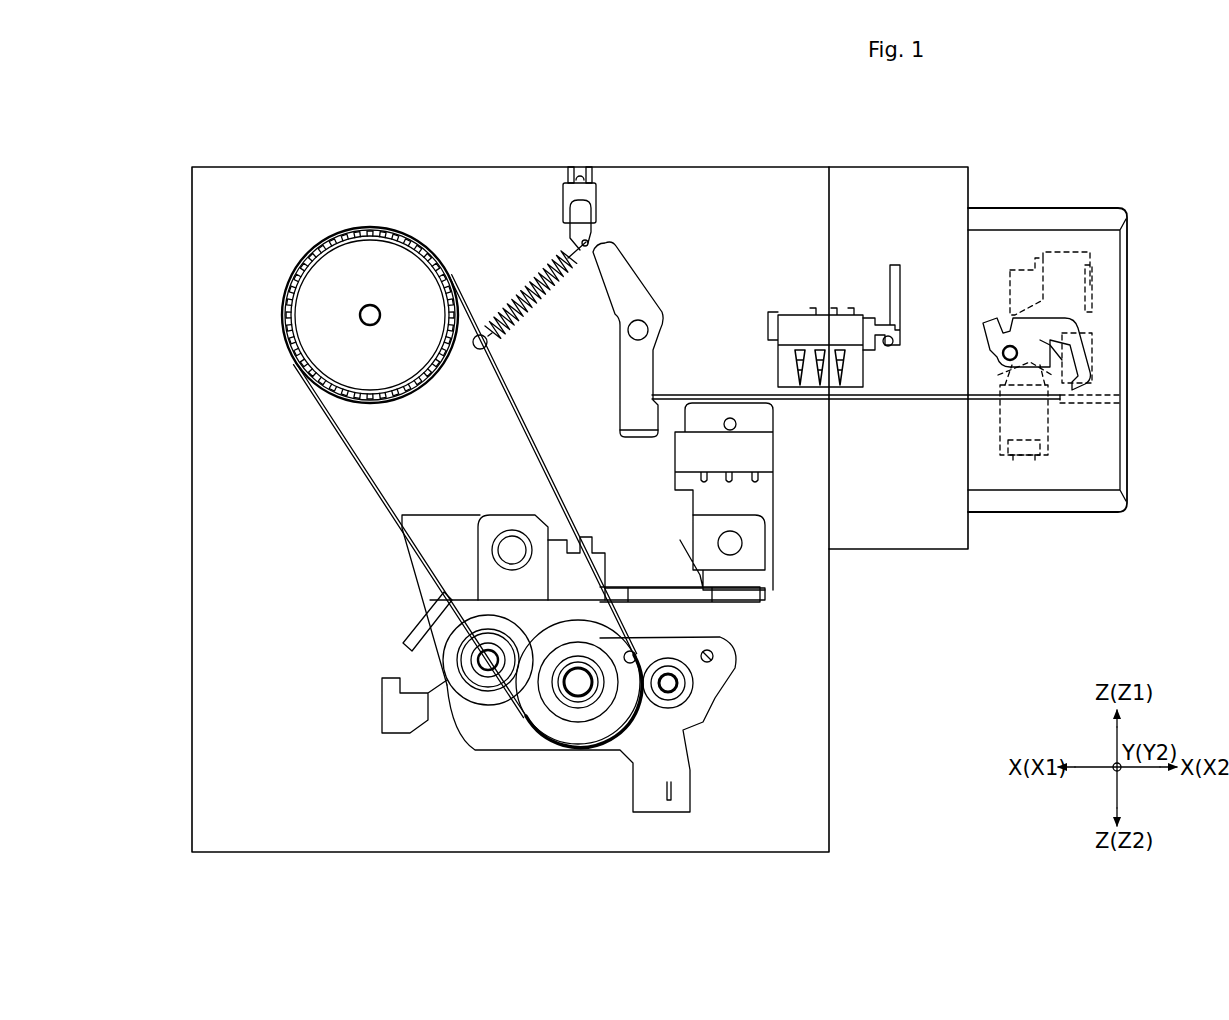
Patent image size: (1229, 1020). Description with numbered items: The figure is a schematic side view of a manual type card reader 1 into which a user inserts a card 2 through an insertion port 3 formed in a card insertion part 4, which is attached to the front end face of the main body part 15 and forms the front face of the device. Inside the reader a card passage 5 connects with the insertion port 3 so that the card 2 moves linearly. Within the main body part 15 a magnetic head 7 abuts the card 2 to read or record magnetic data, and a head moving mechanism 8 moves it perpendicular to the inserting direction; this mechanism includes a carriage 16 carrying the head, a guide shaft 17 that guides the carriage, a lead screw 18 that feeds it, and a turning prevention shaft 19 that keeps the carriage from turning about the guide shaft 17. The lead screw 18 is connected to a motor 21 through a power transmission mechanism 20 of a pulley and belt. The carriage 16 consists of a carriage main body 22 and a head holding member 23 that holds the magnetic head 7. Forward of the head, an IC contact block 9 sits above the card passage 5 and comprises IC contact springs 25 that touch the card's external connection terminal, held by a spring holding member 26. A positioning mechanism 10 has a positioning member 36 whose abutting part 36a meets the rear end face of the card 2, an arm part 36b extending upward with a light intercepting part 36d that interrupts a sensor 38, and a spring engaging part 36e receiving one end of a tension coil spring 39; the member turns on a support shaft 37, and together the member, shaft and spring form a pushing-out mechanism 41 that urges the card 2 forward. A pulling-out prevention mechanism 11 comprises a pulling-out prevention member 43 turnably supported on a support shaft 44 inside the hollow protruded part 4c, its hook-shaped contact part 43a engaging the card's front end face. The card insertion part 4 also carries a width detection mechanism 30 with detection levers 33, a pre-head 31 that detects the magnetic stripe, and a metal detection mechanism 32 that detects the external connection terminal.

The card reader 1 is at (1150, 160).
The card 2 is at (884, 401).
The insertion port 3 is at (1120, 400).
The card insertion part 4 is at (1073, 338).
The protruded part 4c is at (1127, 265).
The card passage 5 is at (933, 422).
The magnetic head 7 is at (775, 455).
The head moving mechanism 8 is at (283, 573).
The IC contact block 9 is at (834, 356).
The positioning mechanism 10 is at (690, 207).
The pulling-out prevention mechanism 11 is at (1008, 320).
The main body part 15 is at (470, 167).
The carriage 16 is at (581, 663).
The guide shaft 17 is at (695, 684).
The lead screw 18 is at (578, 698).
The turning prevention shaft 19 is at (490, 672).
The power transmission mechanism 20 is at (306, 447).
The motor 21 is at (366, 242).
The carriage main body 22 is at (700, 765).
The head holding member 23 is at (692, 515).
The IC contact springs 25 is at (838, 387).
The spring holding member 26 is at (834, 326).
The width detection mechanism 30 is at (1095, 317).
The magnetic head (pre-head) 31 is at (1048, 449).
The metal detection mechanism 32 is at (1092, 350).
The detection levers 33 is at (1095, 283).
The positioning member 36 is at (646, 339).
The abutting part 36a is at (620, 390).
The arm part 36b is at (628, 339).
The light intercepting part 36d is at (597, 213).
The spring engaging part 36e is at (592, 241).
The support shaft 37 is at (628, 331).
The sensor 38 is at (597, 213).
The tension coil spring 39 is at (510, 300).
The pushing-out mechanism 41 is at (548, 340).
The pulling-out prevention member 43 is at (1085, 345).
The contact part 43a is at (1090, 386).
The support shaft 44 is at (1003, 355).